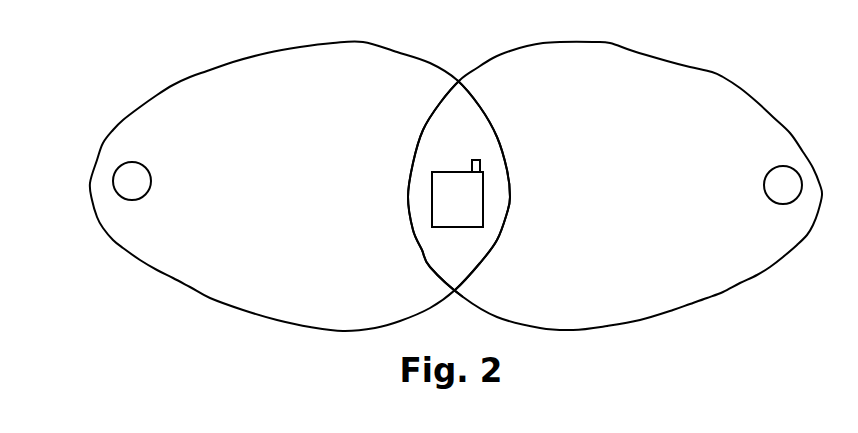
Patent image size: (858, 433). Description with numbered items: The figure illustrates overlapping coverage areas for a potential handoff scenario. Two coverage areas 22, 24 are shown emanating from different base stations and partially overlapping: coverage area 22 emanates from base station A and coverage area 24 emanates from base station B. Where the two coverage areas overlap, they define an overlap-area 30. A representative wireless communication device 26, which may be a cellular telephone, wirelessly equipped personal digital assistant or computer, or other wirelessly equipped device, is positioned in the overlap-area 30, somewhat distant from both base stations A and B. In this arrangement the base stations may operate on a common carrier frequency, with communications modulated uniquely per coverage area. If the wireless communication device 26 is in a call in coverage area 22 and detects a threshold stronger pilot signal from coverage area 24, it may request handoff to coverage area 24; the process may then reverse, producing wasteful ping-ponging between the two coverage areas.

The coverage area 22 is at (208, 70).
The coverage area 24 is at (712, 73).
The overlap-area 30 is at (469, 130).
The WCD 26 is at (472, 228).